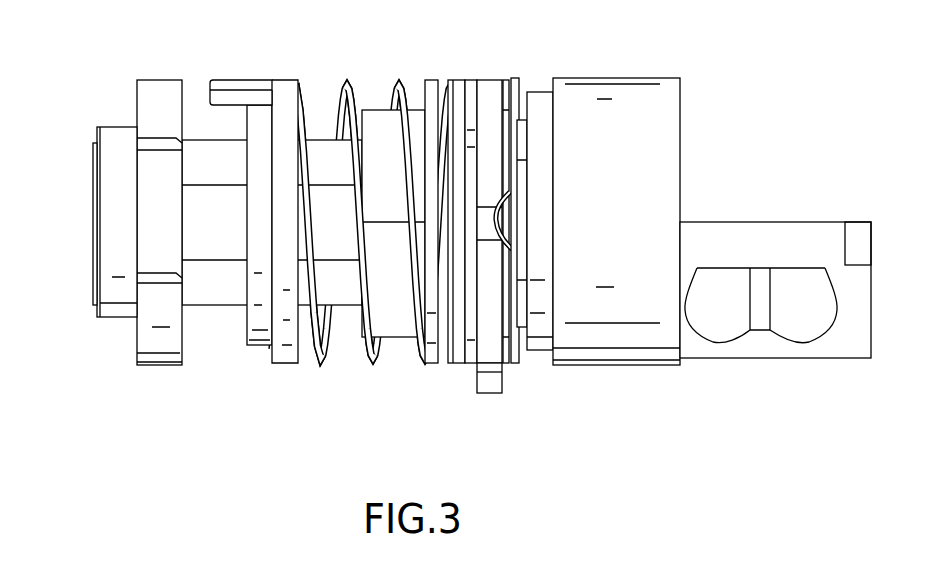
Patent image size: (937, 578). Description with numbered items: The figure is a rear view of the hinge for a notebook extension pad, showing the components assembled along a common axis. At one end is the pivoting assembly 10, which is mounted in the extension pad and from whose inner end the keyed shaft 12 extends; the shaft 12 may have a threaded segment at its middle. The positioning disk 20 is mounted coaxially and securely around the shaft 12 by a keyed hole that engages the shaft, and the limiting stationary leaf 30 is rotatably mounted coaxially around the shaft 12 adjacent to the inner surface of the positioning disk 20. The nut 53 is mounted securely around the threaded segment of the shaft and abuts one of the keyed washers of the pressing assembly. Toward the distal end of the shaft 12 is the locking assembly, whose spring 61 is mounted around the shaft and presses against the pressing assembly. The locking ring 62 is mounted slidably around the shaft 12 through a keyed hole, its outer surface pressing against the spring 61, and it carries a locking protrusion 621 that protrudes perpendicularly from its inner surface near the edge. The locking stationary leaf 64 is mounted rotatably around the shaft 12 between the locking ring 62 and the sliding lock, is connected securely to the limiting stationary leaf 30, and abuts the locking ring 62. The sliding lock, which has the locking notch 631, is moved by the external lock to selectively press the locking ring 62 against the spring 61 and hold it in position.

The pivoting assembly 10 is at (748, 222).
The shaft 12 is at (95, 160).
The positioning disk 20 is at (520, 83).
The limiting stationary leaf 30 is at (490, 97).
The nut 53 is at (392, 327).
The spring 61 is at (402, 87).
The locking ring 62 is at (282, 117).
The locking protrusion 621 is at (243, 97).
The locking notch 631 is at (165, 248).
The locking stationary leaf 64 is at (257, 338).